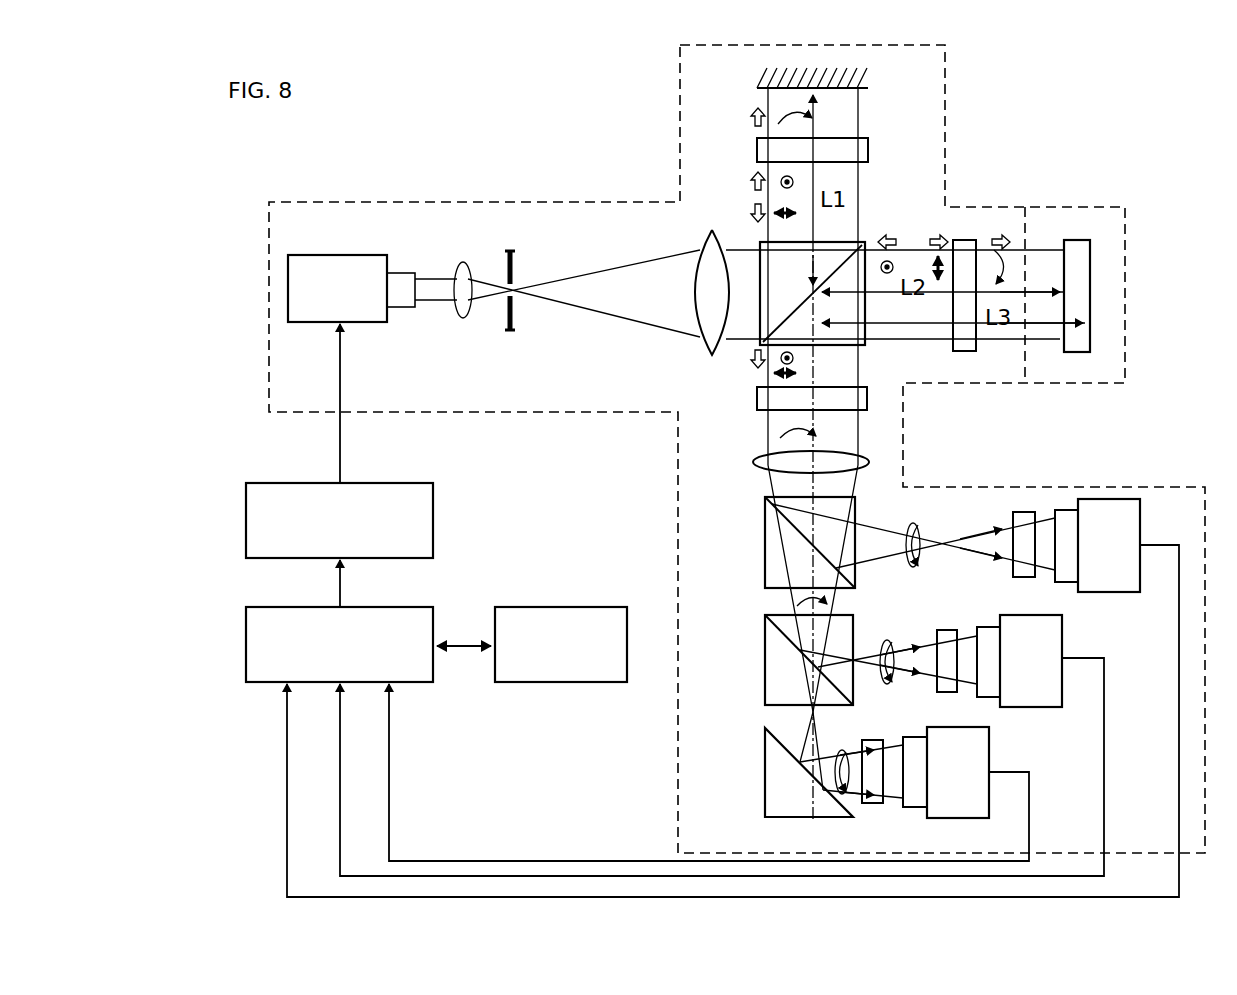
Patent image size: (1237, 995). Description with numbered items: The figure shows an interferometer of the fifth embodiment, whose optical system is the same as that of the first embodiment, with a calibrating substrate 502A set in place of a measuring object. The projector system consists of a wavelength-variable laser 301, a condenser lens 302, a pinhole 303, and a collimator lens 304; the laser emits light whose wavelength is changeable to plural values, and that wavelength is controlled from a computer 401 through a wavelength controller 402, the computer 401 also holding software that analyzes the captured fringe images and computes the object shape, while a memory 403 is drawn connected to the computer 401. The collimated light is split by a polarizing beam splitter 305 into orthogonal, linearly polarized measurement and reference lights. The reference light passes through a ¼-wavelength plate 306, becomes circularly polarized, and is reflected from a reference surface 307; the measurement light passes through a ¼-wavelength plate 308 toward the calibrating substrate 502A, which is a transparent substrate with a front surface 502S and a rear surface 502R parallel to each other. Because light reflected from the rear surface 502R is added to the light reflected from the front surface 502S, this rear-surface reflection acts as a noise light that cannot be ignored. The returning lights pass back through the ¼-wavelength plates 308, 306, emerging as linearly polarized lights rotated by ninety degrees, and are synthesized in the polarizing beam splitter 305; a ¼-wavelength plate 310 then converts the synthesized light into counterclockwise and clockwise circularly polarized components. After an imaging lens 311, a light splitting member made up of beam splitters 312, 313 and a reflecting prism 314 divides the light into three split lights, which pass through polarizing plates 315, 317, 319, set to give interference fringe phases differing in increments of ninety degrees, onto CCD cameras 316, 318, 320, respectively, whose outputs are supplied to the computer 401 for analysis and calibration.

The wavelength-variable laser 301 is at (310, 322).
The condenser lens 302 is at (463, 318).
The pinhole 303 is at (515, 297).
The collimator lens 304 is at (712, 230).
The polarizing beam splitter 305 is at (865, 345).
The ¼-wavelength plate 306 is at (868, 150).
The reference surface 307 is at (840, 88).
The ¼-wavelength plate 308 is at (965, 351).
The ¼-wavelength plate 310 is at (755, 395).
The imaging lens 311 is at (752, 463).
The beam splitter 312 is at (765, 545).
The beam splitter 313 is at (765, 658).
The reflecting prism 314 is at (765, 777).
The polarizing plate 315 is at (1024, 512).
The CCD camera 316 is at (1140, 525).
The polarizing plate 317 is at (947, 630).
The CCD camera 318 is at (1062, 635).
The polarizing plate 319 is at (873, 803).
The CCD camera 320 is at (990, 748).
The computer 401 is at (246, 645).
The wavelength controller 402 is at (246, 520).
The memory 403 is at (550, 607).
The front surface 502S is at (1123, 297).
The rear surface 502R is at (1132, 332).
The calibrating substrate 502A is at (1077, 352).